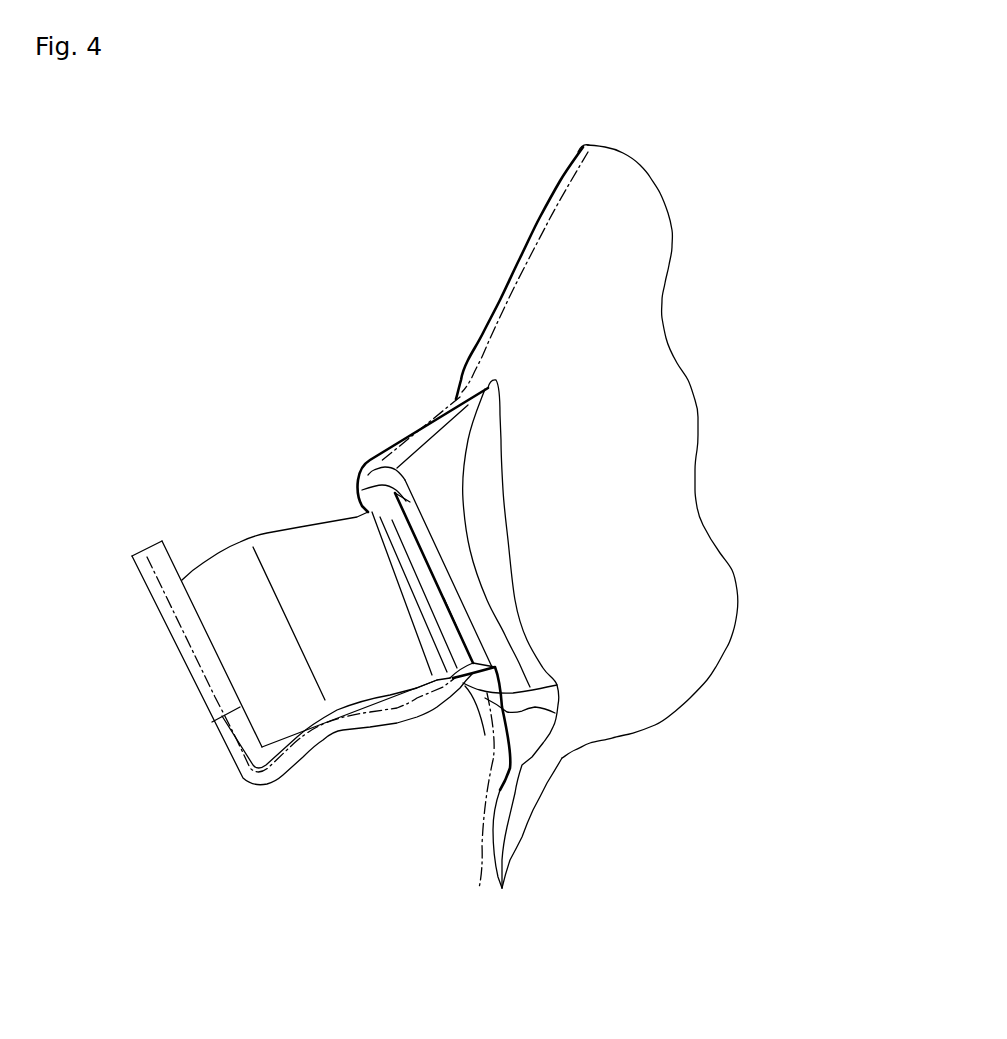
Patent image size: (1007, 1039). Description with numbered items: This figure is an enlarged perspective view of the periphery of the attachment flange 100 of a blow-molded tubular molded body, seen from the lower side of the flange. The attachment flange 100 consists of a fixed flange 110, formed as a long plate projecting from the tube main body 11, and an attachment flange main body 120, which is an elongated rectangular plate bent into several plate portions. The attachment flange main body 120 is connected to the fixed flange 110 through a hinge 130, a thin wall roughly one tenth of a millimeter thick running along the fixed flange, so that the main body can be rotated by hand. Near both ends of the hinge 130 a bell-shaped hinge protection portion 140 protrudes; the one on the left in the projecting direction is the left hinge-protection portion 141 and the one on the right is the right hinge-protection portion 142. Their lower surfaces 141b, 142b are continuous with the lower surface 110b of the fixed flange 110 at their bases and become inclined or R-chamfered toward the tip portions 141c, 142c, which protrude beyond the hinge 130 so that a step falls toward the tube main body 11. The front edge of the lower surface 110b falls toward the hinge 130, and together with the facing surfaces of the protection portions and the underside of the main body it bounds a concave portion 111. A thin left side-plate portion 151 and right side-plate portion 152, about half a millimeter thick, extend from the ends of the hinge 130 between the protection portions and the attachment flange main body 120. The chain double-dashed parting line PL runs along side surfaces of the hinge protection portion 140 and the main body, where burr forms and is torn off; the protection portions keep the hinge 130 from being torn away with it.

The tube main body 11 is at (577, 248).
The attachment flange 100 is at (198, 412).
The fixed flange 110 is at (455, 550).
The lower surface of the fixed flange 110b is at (440, 497).
The concave portion 111 is at (450, 592).
The attachment flange main body 120 is at (232, 597).
The hinge 130 is at (460, 628).
The hinge protection portion 140 is at (358, 603).
The left hinge-protection portion 141 is at (367, 450).
The lower surface of the left hinge-protection portion 141b is at (363, 471).
The tip portion of the left hinge-protection portion 141c is at (356, 479).
The right hinge-protection portion 142 is at (470, 708).
The lower surface of the right hinge-protection portion 142b is at (463, 687).
The tip portion of the right hinge-protection portion 142c is at (462, 681).
The left side-plate portion 151 is at (360, 500).
The right side-plate portion 152 is at (453, 677).
The parting line PL is at (479, 888).